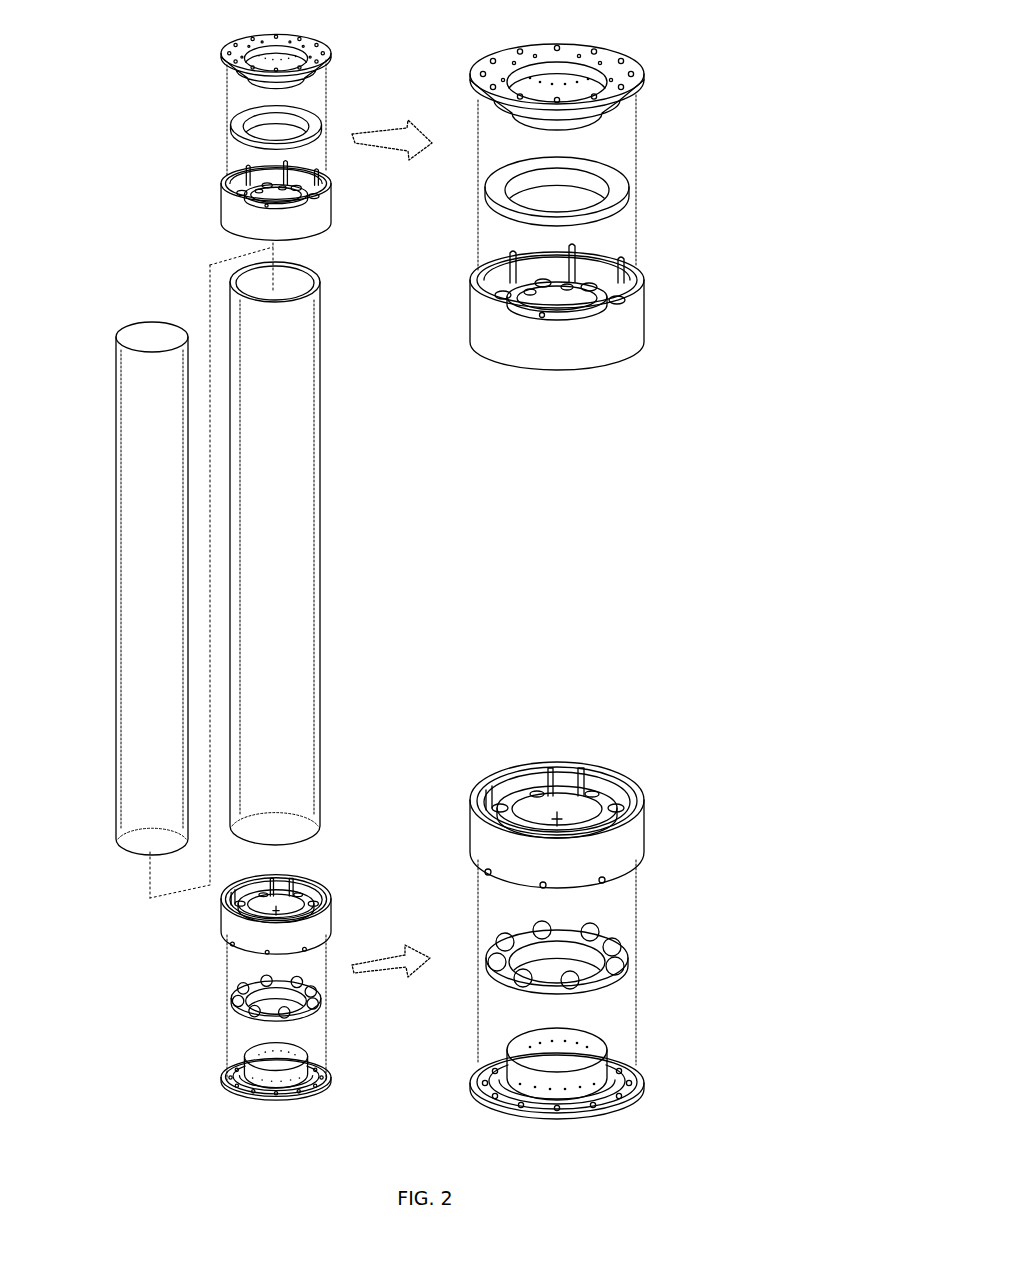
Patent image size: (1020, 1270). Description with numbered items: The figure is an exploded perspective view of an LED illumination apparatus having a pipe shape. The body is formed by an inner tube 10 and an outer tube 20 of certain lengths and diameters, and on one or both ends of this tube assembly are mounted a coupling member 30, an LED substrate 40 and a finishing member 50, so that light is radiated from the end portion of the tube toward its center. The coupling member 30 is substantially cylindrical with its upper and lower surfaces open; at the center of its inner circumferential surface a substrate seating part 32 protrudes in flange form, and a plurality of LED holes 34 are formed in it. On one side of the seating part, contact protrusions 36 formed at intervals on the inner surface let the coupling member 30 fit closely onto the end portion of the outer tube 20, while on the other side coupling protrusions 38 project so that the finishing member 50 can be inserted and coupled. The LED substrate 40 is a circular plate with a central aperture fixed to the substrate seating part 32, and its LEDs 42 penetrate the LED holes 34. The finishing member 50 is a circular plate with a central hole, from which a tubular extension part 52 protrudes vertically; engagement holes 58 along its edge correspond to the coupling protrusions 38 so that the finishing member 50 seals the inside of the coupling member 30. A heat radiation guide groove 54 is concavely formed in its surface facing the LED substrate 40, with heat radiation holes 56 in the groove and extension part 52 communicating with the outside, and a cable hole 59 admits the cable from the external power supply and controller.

The inner tube 10 is at (116, 600).
The outer tube 20 is at (321, 528).
The coupling member 30 is at (655, 92).
The substrate seating part 32 is at (595, 797).
The LED holes 34 is at (575, 258).
The contact protrusions 36 is at (525, 775).
The coupling protrusions 38 is at (600, 287).
The LED substrate 40 is at (638, 203).
The LEDs 42 is at (525, 220).
The finishing member 50 is at (620, 372).
The extension part 52 is at (608, 1062).
The heat radiation guide groove 54 is at (614, 1090).
The heat radiation holes 56 is at (572, 78).
The engagement holes 58 is at (490, 78).
The cable hole 59 is at (622, 100).